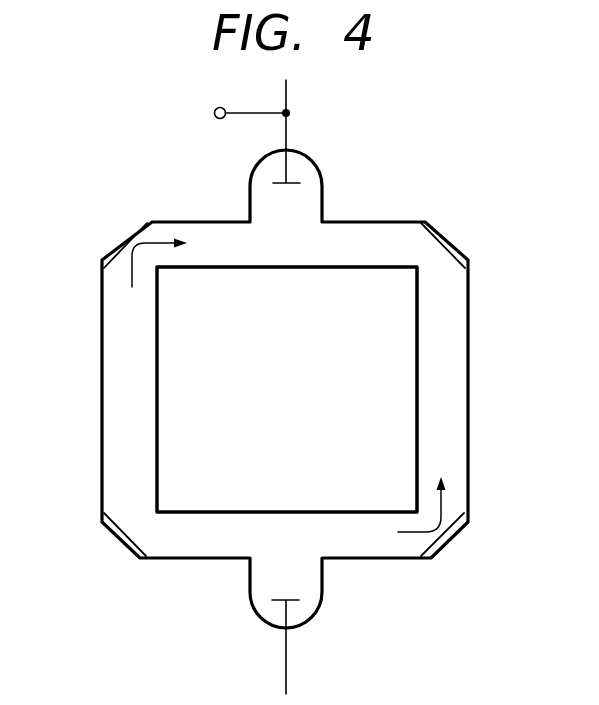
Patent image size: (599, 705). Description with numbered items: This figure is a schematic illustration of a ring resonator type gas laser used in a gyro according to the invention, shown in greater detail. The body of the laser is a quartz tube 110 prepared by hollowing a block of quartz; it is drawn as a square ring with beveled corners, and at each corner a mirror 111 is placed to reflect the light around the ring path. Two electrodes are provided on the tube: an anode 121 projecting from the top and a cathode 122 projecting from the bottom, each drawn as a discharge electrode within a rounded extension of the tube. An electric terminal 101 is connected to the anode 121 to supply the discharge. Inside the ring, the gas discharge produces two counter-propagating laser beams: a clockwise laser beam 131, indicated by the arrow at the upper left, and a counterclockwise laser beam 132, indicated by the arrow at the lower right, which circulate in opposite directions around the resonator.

The electric terminal 101 is at (213, 114).
The quartz tube 110 is at (458, 400).
The mirror 111 is at (455, 247).
The anode 121 is at (287, 137).
The cathode 122 is at (286, 643).
The clockwise laser beam 131 is at (131, 282).
The counterclockwise laser beam 132 is at (442, 507).